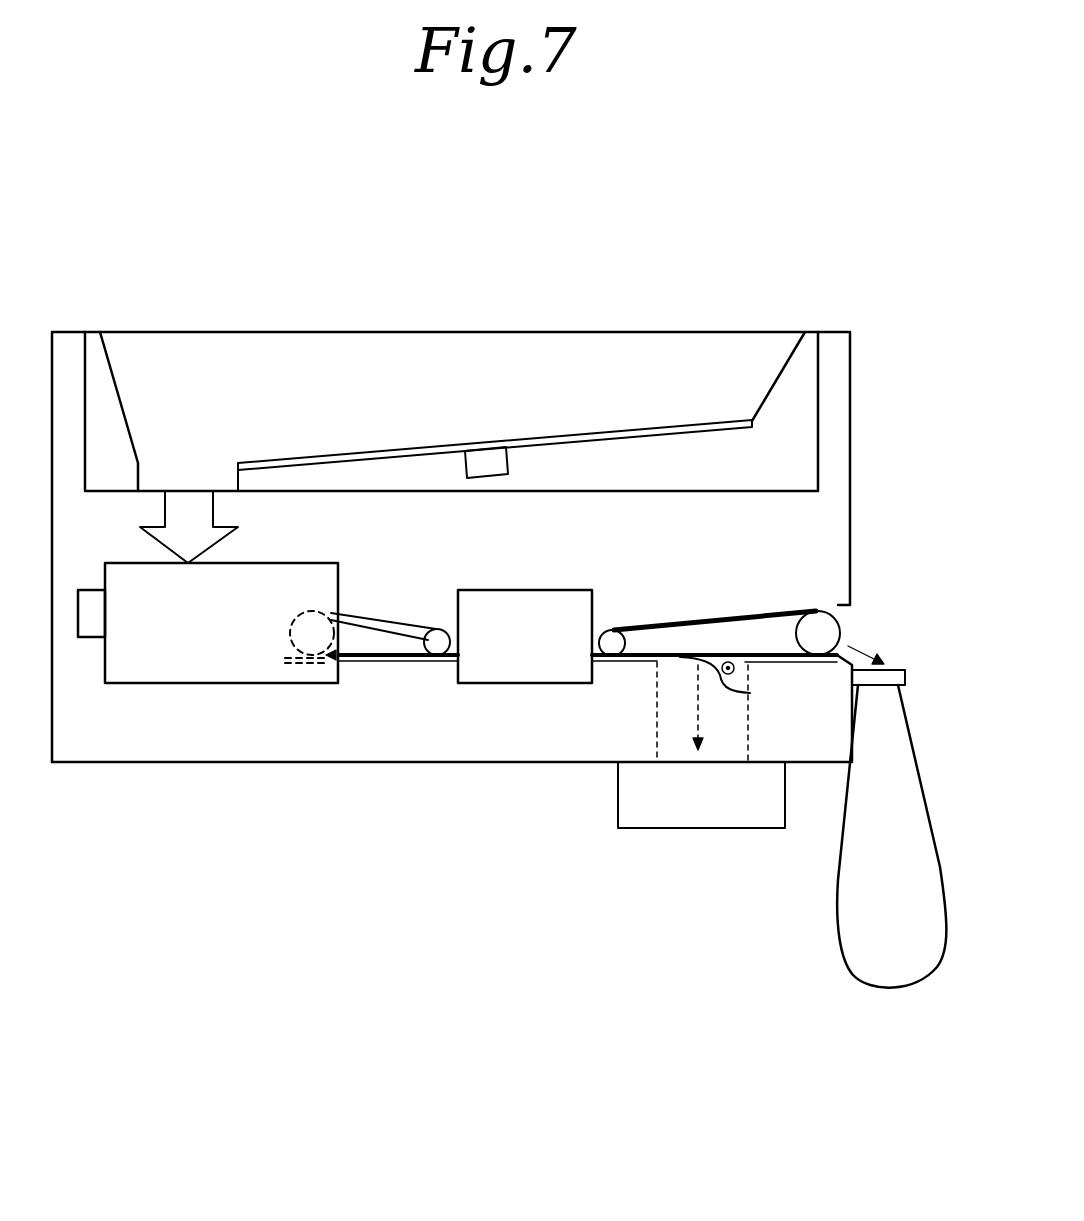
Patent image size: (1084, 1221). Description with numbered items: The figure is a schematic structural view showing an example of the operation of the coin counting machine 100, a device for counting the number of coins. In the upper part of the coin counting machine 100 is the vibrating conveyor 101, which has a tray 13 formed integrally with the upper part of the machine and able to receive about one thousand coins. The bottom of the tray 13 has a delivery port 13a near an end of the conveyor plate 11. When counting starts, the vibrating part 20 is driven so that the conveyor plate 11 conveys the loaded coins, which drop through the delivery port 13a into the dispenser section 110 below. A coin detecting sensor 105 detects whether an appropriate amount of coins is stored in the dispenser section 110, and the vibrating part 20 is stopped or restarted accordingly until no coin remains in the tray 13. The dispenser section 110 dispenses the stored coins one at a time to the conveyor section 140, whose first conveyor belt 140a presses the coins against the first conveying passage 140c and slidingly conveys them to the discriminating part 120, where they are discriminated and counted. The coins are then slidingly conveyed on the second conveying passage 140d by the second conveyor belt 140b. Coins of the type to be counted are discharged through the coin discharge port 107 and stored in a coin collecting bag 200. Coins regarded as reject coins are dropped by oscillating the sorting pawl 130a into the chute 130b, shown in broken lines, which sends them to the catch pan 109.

The coin counting machine 100 is at (443, 257).
The vibrating conveyor 101 is at (595, 348).
The tray 13 is at (763, 350).
The delivery port 13a is at (188, 463).
The conveyor plate 11 is at (420, 447).
The vibrating part 20 is at (507, 460).
The dispenser section 110 is at (183, 665).
The coin detecting sensor 105 is at (90, 627).
The conveyor section 140 is at (663, 613).
The first conveyor belt 140a is at (375, 612).
The second conveyor belt 140b is at (698, 612).
The first conveying passage 140c is at (378, 665).
The second conveying passage 140d is at (637, 665).
The discriminating part 120 is at (516, 680).
The sorting pawl 130a is at (750, 693).
The chute 130b is at (750, 737).
The catch pan 109 is at (698, 815).
The coin discharge port 107 is at (855, 634).
The coin collecting bag 200 is at (847, 855).